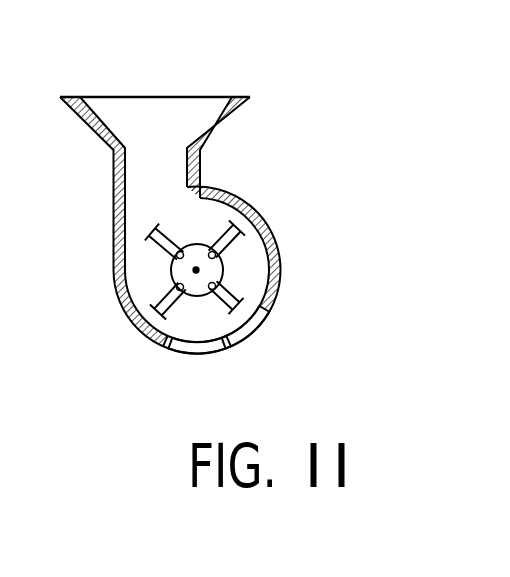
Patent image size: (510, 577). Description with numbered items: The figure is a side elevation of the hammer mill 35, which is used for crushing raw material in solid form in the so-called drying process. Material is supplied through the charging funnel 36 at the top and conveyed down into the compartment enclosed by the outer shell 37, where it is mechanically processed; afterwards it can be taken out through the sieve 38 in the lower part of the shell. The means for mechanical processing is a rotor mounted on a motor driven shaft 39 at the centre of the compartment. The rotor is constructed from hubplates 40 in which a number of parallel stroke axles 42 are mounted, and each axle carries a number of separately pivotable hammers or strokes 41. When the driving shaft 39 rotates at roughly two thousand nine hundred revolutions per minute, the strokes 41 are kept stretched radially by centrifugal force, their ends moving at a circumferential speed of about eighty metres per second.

The hammer mill 35 is at (337, 69).
The charging funnel 36 is at (229, 115).
The outer shell 37 is at (262, 223).
The sieve 38 is at (256, 328).
The motor driven shaft 39 is at (199, 270).
The hubplates 40 is at (174, 266).
The hammers or strokes 41 is at (160, 317).
The parallel stroke axles 42 is at (182, 289).